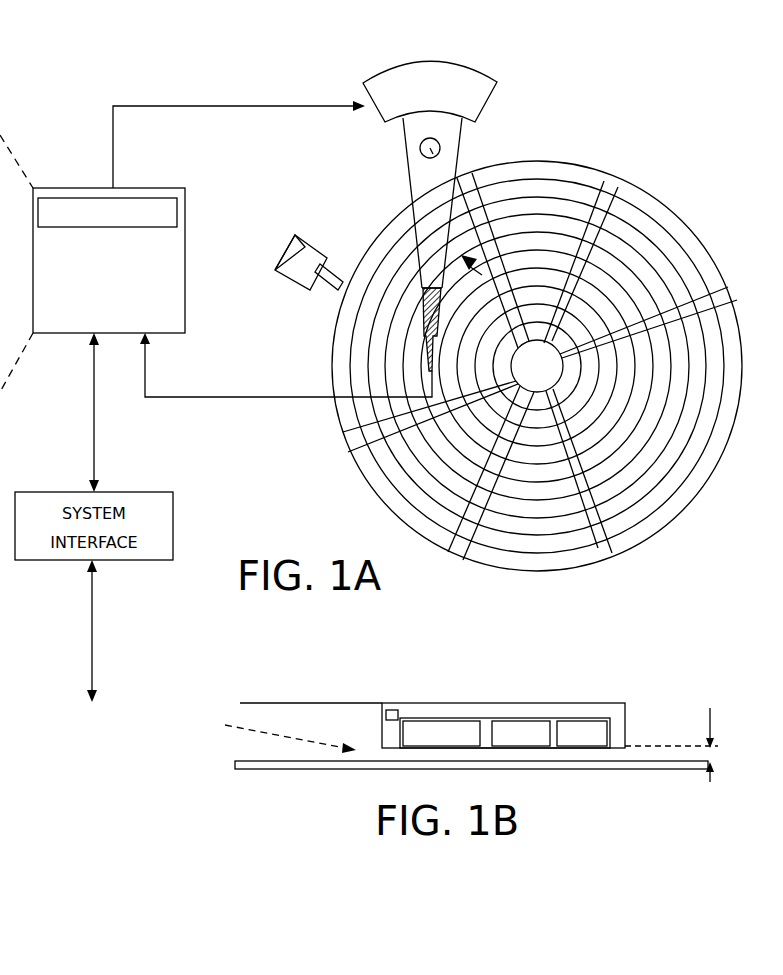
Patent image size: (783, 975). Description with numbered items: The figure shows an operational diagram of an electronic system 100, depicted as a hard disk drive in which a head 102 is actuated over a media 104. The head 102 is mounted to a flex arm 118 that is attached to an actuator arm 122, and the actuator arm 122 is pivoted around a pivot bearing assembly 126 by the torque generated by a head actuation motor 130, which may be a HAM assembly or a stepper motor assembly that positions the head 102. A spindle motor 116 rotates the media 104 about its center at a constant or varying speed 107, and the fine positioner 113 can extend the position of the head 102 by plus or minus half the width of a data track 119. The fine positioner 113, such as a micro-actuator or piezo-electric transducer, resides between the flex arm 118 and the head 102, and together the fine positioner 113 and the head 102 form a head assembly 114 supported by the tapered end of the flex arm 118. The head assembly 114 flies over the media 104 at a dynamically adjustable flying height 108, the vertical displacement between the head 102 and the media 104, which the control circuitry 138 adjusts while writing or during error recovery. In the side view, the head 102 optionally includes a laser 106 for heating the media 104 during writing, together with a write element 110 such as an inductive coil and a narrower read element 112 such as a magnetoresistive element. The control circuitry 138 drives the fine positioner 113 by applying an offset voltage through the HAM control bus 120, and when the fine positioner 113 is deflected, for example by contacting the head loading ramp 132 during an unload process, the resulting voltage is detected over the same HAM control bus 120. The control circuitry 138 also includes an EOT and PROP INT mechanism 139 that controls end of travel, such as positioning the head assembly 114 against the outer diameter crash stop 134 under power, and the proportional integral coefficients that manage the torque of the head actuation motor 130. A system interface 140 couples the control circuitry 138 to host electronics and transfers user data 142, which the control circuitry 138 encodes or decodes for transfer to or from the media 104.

In FIG. 1A, the electronic system 100 is at (668, 66).
In FIG. 1B, the head 102 is at (622, 712).
In FIG. 1A, the media 104 is at (668, 212).
In FIG. 1B, the media 104 is at (322, 769).
In FIG. 1B, the laser 106 is at (462, 721).
In FIG. 1A, the speed 107 is at (553, 188).
In FIG. 1B, the speed 107 is at (268, 734).
In FIG. 1B, the flying height 108 is at (711, 712).
In FIG. 1B, the write element 110 is at (536, 721).
In FIG. 1B, the read element 112 is at (580, 721).
In FIG. 1B, the fine positioner 113 is at (400, 718).
In FIG. 1B, the head assembly 114 is at (386, 714).
In FIG. 1A, the spindle motor 116 is at (560, 372).
In FIG. 1A, the flex arm 118 is at (428, 345).
In FIG. 1B, the flex arm 118 is at (300, 703).
In FIG. 1A, the data track 119 is at (655, 487).
In FIG. 1A, the head actuation motor (HAM) control bus 120 is at (113, 130).
In FIG. 1A, the actuator arm 122 is at (435, 247).
In FIG. 1A, the pivot bearing assembly 126 is at (422, 153).
In FIG. 1A, the head actuation motor 130 is at (462, 86).
In FIG. 1A, the head loading ramp 132 is at (305, 288).
In FIG. 1A, the outer diameter crash stop 134 is at (295, 234).
In FIG. 1A, the control circuitry 138 is at (170, 288).
In FIG. 1A, the EOT and PROP INT mechanism 139 is at (107, 198).
In FIG. 1A, the system interface 140 is at (107, 560).
In FIG. 1A, the user data 142 is at (94, 400).